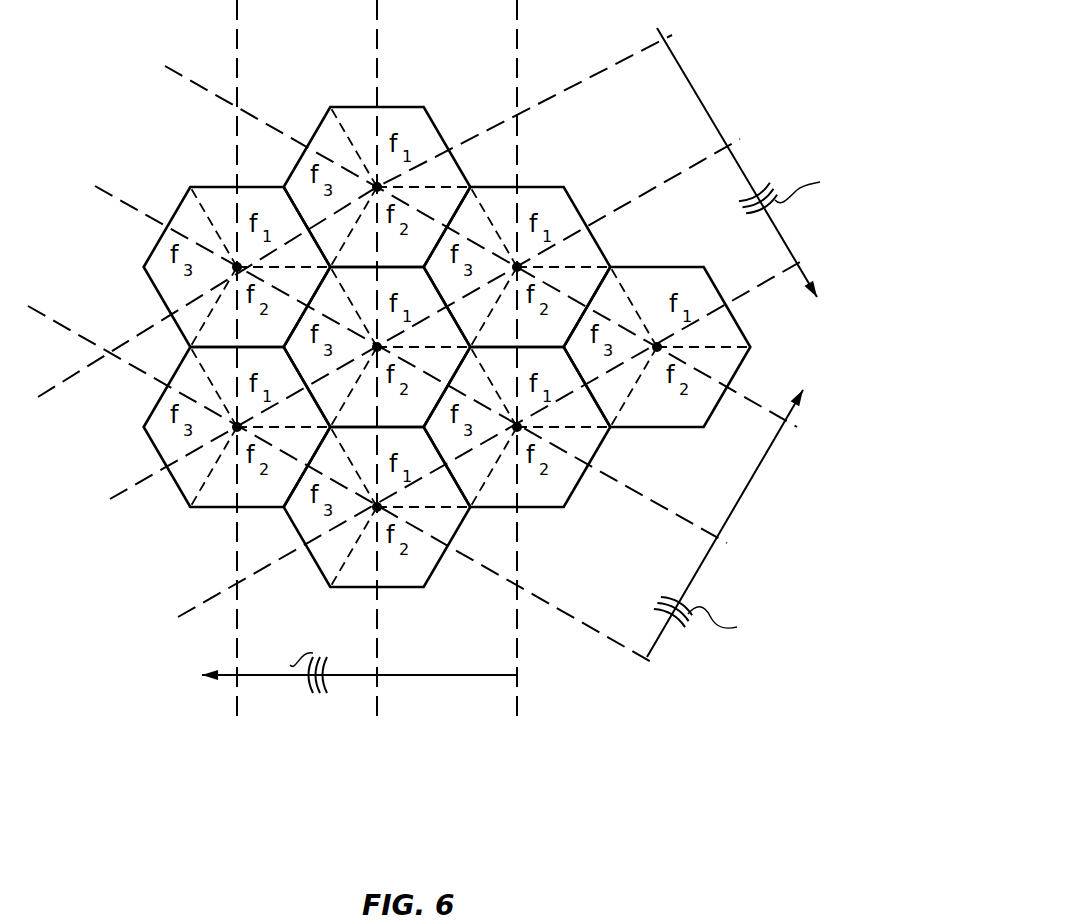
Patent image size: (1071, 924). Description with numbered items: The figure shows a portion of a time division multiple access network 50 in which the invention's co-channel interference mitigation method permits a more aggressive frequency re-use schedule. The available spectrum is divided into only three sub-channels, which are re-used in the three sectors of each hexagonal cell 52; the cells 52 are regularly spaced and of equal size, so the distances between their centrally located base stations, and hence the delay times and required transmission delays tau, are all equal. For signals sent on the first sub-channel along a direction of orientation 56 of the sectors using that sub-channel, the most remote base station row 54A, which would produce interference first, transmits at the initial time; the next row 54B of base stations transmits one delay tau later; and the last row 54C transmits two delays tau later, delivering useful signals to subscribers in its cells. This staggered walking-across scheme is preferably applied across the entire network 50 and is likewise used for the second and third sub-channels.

The time division multiple access (TDMA) network 50 is at (128, 38).
The cell 52 is at (568, 191).
The most remote base station row 54A is at (600, 633).
The next row of base stations 54B is at (630, 490).
The last row of base stations 54C is at (786, 418).
The direction of orientation 56 is at (770, 447).